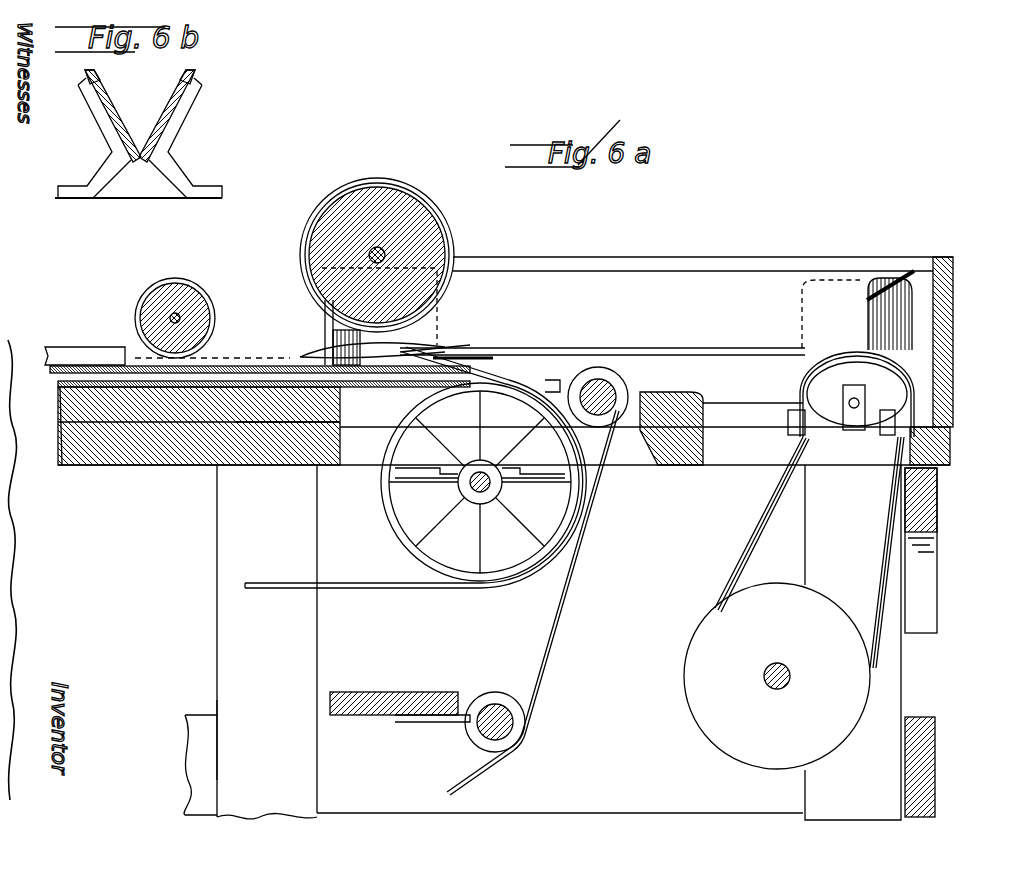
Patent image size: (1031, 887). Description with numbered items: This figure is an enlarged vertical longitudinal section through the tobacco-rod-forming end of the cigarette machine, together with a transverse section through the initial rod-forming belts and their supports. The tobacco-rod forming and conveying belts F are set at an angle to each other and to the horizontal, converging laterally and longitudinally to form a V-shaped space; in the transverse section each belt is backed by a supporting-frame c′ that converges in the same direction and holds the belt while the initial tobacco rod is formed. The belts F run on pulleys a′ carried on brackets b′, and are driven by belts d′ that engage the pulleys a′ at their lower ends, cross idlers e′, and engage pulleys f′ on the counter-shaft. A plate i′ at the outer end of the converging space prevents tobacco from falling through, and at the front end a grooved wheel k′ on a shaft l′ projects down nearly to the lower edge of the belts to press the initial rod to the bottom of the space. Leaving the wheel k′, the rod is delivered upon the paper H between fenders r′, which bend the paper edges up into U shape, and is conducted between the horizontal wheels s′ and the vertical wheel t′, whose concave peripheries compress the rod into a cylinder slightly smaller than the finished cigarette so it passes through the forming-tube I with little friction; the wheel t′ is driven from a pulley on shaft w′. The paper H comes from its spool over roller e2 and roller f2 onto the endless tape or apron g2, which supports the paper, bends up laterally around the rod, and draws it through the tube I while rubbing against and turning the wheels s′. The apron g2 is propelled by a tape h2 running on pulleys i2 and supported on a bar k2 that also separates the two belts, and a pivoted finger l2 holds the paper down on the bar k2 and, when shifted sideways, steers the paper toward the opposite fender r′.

In FIG. 6B, the supporting-frame c′ is at (85, 73).
In FIG. 6B, the tobacco-rod forming and conveying belts F is at (188, 80).
In FIG. 6A, the tobacco-rod forming and conveying belts F is at (880, 318).
In FIG. 6A, the vertical wheel t′ is at (186, 290).
In FIG. 6A, the shaft l′ is at (373, 257).
In FIG. 6A, the wheel k′ is at (436, 232).
In FIG. 6A, the finger l2 is at (405, 352).
In FIG. 6A, the endless tape or apron g2 is at (513, 373).
In FIG. 6A, the plate i′ is at (896, 292).
In FIG. 6A, the pulley a′ is at (877, 392).
In FIG. 6A, the fender r′ is at (312, 350).
In FIG. 6A, the horizontal wheel s′ is at (118, 338).
In FIG. 6A, the forming-tube I is at (48, 358).
In FIG. 6A, the roller f2 is at (620, 378).
In FIG. 6A, the bracket b′ is at (853, 413).
In FIG. 6A, the idler e′ is at (910, 430).
In FIG. 6A, the tape h2 is at (102, 388).
In FIG. 6A, the bar k2 is at (235, 422).
In FIG. 6A, the pulley i2 is at (392, 500).
In FIG. 6A, the shaft w′ is at (478, 484).
In FIG. 6A, the paper H is at (560, 610).
In FIG. 6A, the frame legs a is at (534, 737).
In FIG. 6A, the roller e2 is at (491, 714).
In FIG. 6A, the belt d′ is at (897, 507).
In FIG. 6A, the shaft d is at (790, 677).
In FIG. 6A, the pulley f′ is at (848, 697).